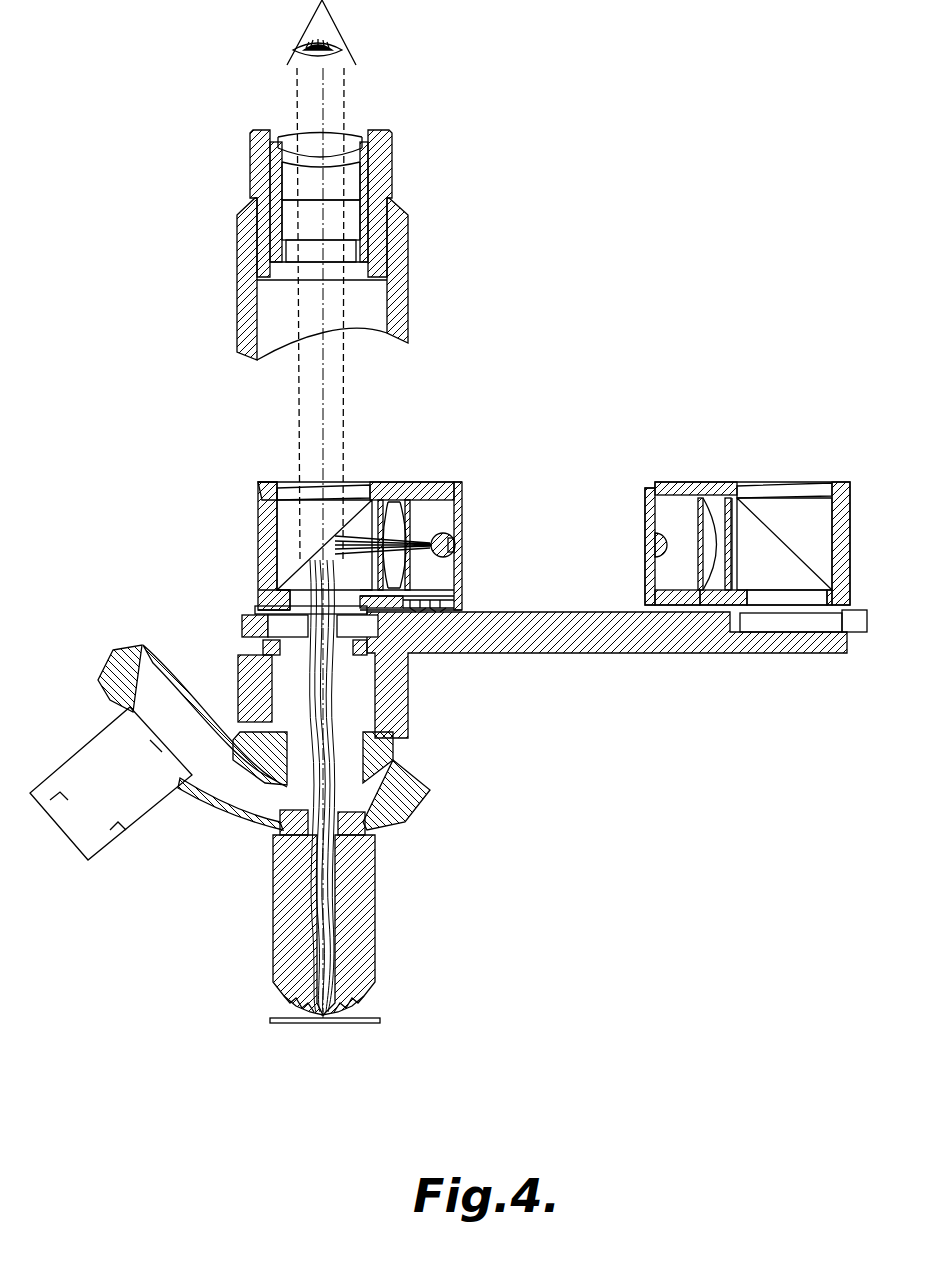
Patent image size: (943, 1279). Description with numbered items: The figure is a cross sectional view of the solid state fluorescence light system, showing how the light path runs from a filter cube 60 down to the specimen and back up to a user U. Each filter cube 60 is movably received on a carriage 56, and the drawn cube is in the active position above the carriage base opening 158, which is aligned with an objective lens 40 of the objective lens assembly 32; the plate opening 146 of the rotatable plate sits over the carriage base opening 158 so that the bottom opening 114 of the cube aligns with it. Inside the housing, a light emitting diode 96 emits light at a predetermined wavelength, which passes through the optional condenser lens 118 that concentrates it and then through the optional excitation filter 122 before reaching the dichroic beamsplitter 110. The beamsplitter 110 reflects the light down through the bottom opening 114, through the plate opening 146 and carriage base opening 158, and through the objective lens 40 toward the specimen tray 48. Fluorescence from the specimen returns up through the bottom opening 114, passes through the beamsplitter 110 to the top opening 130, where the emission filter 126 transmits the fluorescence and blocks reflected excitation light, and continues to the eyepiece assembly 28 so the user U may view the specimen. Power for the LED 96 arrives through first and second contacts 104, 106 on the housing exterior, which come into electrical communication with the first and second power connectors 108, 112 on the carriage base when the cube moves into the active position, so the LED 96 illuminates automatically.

The user U is at (340, 22).
The eyepiece assembly 28 is at (412, 181).
The objective lens assembly 32 is at (148, 908).
The objective lens 40 is at (363, 932).
The specimen tray 48 is at (380, 1020).
The carriage 56 is at (619, 655).
The filter cube 60 is at (448, 474).
The light emitting diode 96 is at (455, 542).
The first contact 104 is at (450, 593).
The second contact 106 is at (430, 584).
The first power connector 108 is at (437, 612).
The dichroic beamsplitter 110 is at (283, 556).
The second power connector 112 is at (417, 612).
The bottom opening 114 is at (262, 590).
The condenser lens 118 is at (405, 512).
The excitation filter 122 is at (398, 510).
The emission filter 126 is at (293, 490).
The top opening 130 is at (262, 490).
The plate opening 146 is at (262, 627).
The carriage base opening 158 is at (270, 646).